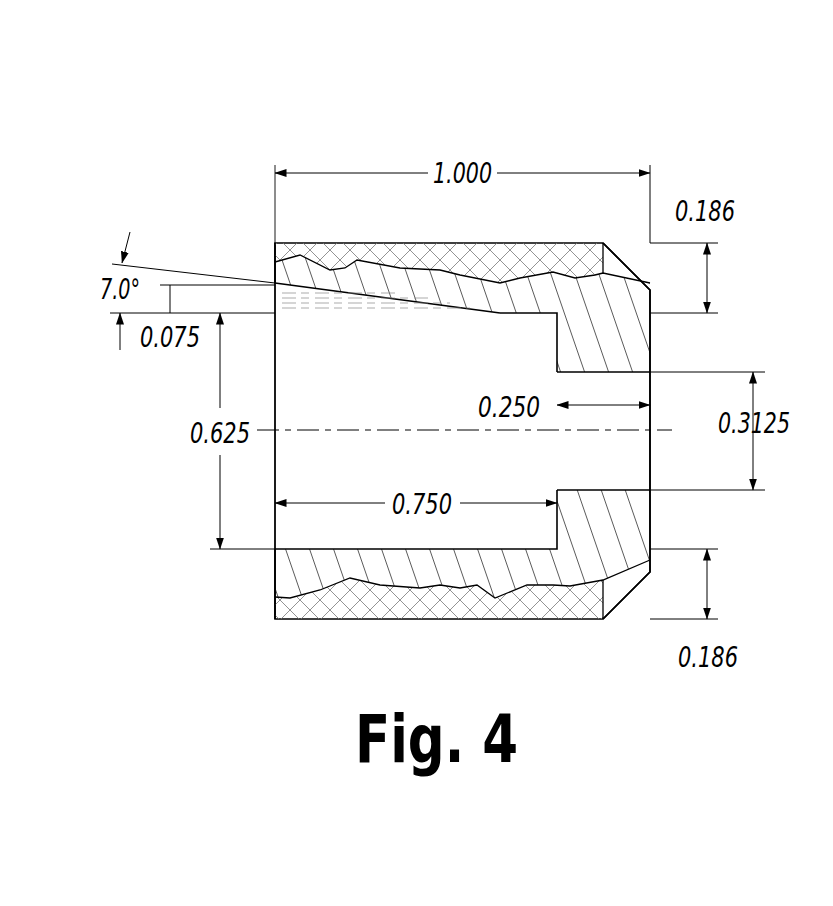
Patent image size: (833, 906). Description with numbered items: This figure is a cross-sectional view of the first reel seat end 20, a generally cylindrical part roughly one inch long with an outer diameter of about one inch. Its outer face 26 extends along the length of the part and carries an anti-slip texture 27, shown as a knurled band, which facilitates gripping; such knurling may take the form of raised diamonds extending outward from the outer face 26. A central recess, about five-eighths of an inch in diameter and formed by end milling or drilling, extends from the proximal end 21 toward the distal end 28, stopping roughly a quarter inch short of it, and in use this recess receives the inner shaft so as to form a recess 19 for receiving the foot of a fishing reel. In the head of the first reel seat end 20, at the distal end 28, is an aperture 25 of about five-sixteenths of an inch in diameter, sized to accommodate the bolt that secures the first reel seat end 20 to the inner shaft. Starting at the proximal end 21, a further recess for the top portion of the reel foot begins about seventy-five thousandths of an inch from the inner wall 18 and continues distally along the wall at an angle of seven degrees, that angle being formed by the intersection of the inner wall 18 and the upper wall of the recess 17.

The upper wall of the recess 17 is at (357, 290).
The inner wall 18 is at (520, 313).
The recess for receiving the foot of a fishing reel 19 is at (320, 306).
The first reel seat end 20 is at (606, 107).
The proximal end 21 is at (258, 575).
The aperture 25 is at (613, 470).
The outer face 26 is at (553, 622).
The anti-slip texture 27 is at (557, 257).
The distal end 28 is at (693, 522).